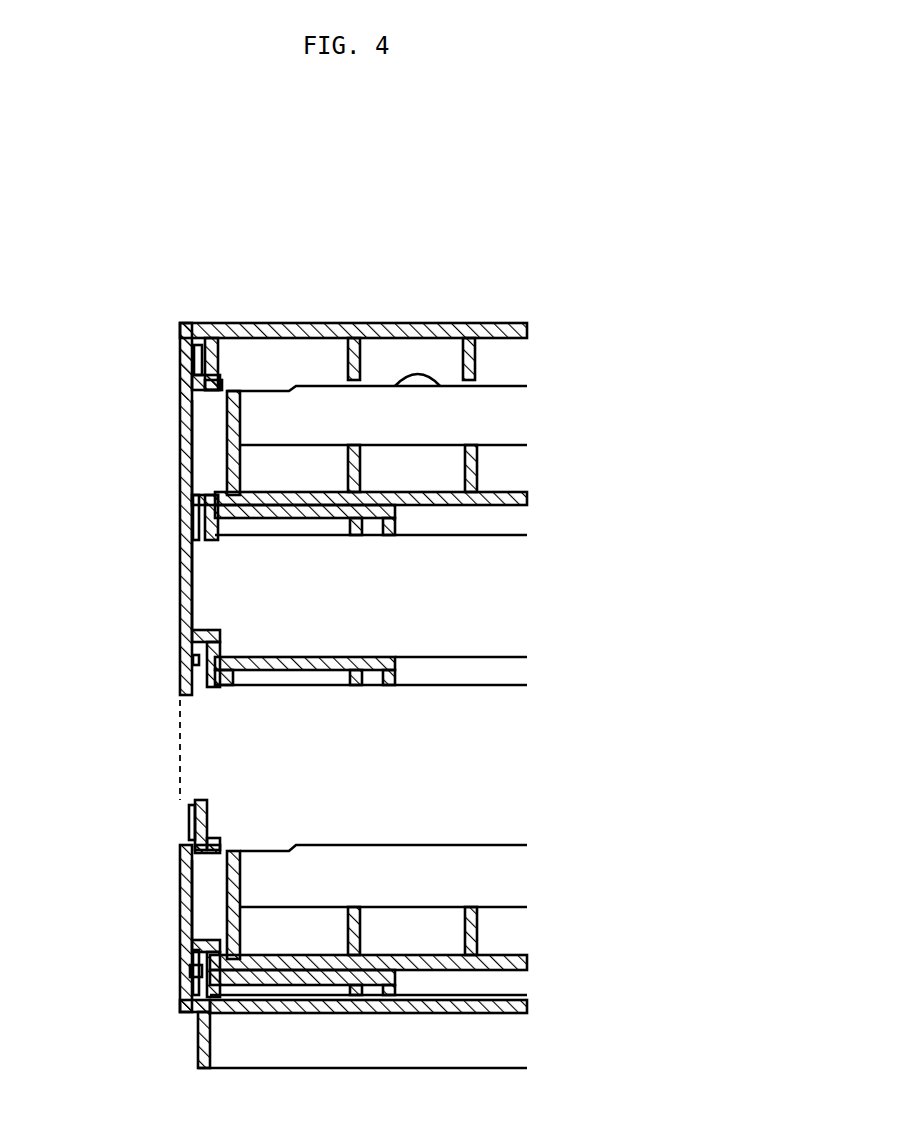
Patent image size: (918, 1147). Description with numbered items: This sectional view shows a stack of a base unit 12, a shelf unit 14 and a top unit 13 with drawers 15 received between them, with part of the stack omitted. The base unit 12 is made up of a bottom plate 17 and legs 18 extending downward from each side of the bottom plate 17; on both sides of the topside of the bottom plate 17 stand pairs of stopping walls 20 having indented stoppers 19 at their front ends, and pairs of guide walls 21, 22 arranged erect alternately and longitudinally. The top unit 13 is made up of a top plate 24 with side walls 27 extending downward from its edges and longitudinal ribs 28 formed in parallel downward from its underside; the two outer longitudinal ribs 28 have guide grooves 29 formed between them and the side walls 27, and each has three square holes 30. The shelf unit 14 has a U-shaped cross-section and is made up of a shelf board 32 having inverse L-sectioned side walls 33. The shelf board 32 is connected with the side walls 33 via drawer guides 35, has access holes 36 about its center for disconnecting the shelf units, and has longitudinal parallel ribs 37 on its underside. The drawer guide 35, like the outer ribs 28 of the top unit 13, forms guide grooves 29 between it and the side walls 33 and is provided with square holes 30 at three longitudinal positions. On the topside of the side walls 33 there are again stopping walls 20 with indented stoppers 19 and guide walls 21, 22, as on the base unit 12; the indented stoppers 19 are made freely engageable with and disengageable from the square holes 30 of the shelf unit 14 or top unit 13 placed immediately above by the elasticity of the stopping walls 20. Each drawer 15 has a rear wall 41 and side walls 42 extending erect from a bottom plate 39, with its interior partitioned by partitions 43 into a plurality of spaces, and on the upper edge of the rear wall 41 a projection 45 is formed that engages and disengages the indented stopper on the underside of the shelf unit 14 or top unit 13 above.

The base unit 12 is at (196, 1050).
The top unit 13 is at (176, 327).
The shelf unit 14 is at (178, 470).
The drawer 15 is at (512, 384).
The bottom plate 17 is at (305, 1014).
The legs 18 is at (214, 1040).
The indented stoppers 19 is at (212, 338).
The stopping walls 20 is at (192, 378).
The guide walls 21 is at (193, 725).
The guide walls 22 is at (203, 380).
The top plate 24 is at (492, 330).
The side walls 27 is at (192, 345).
The longitudinal ribs 28 is at (352, 340).
The guide grooves 29 is at (200, 334).
The square holes 30 is at (218, 352).
The shelf board 32 is at (295, 672).
The side walls 33 is at (180, 600).
The drawer guides 35 is at (228, 676).
The access holes 36 is at (394, 680).
The longitudinal ribs 37 is at (356, 680).
The bottom plate 39 is at (512, 490).
The rear wall 41 is at (512, 420).
The side walls 42 is at (240, 440).
The partitions 43 is at (466, 478).
The projection 45 is at (398, 385).